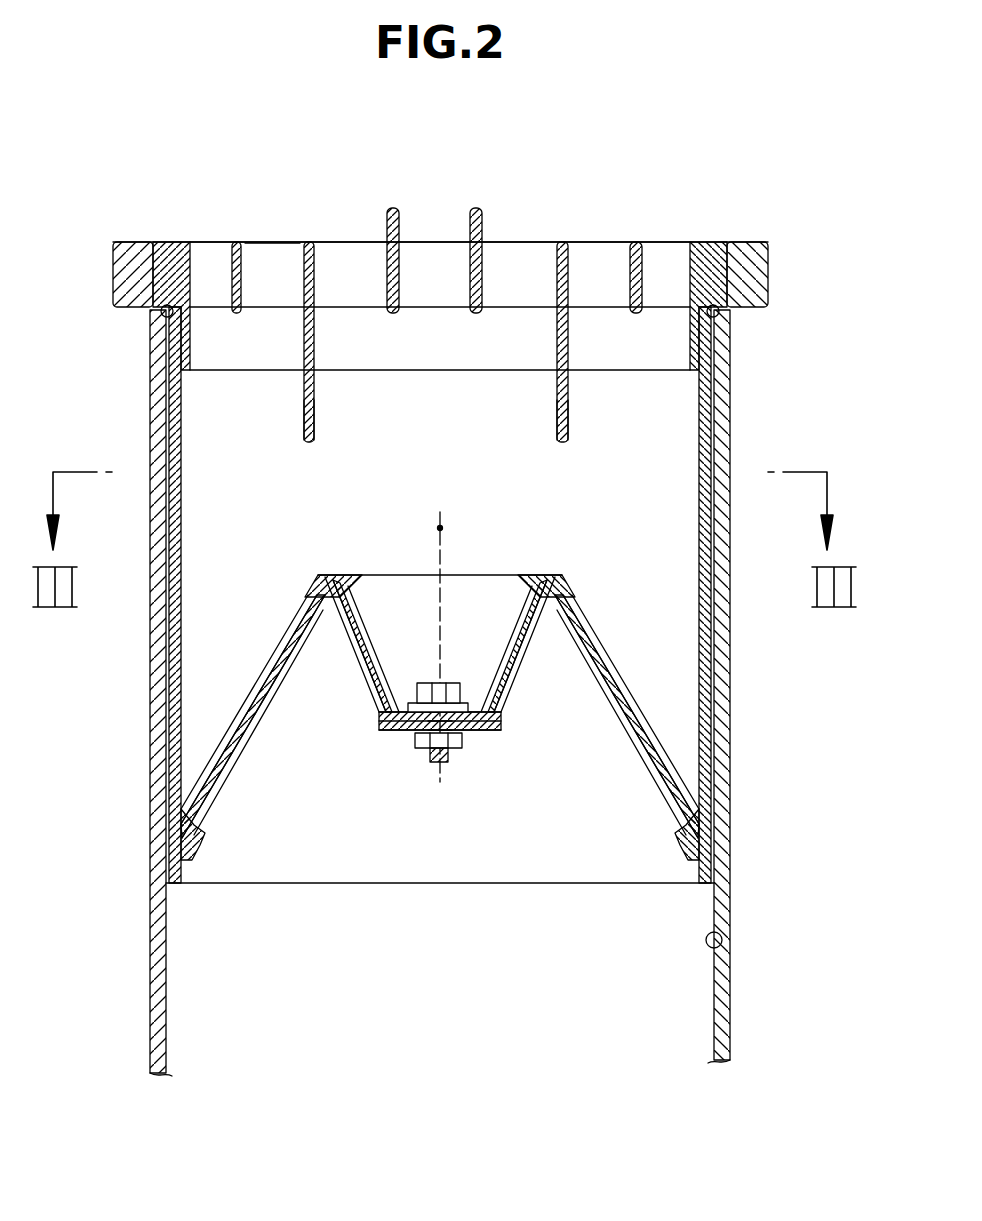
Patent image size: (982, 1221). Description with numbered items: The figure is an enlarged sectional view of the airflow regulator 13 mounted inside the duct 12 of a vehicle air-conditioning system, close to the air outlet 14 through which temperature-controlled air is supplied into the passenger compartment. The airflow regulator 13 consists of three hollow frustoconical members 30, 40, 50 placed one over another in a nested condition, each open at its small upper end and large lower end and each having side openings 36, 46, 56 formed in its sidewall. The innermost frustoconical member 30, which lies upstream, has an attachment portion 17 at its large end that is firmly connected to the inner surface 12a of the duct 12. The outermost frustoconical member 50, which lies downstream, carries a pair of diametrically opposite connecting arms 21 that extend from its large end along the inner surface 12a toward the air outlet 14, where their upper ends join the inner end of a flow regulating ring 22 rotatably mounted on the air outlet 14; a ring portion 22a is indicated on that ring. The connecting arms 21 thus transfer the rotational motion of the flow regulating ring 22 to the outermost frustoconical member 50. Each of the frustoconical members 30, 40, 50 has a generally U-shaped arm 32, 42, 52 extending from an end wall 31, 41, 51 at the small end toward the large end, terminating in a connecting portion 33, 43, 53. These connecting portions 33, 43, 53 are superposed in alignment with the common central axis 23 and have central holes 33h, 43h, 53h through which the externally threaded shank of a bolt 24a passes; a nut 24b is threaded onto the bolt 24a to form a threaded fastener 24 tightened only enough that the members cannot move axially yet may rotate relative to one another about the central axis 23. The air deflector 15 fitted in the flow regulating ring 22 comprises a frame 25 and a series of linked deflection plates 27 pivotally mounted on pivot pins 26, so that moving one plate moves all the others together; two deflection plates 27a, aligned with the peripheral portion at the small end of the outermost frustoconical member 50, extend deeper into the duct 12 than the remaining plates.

The duct 12 is at (736, 1018).
The inner surface of the duct 12a is at (722, 941).
The airflow regulator 13 is at (790, 225).
The air outlet 14 is at (513, 300).
The air deflector 15 is at (180, 242).
The attachment portion 17 is at (718, 876).
The connecting arms 21 is at (169, 668).
The flow regulating ring 22 is at (768, 268).
The inner flange portion 22a is at (707, 243).
The common central axis 23 is at (441, 528).
The threaded fastener 24 is at (443, 765).
The bolt 24a is at (442, 683).
The nut 24b is at (447, 757).
The frame 25 is at (262, 243).
The pivot pins 26 is at (243, 272).
The deflection plates 27 is at (304, 318).
The extended deflection plates 27a is at (314, 418).
The innermost frustoconical member 30 is at (575, 600).
The end wall 31 is at (333, 580).
The U-shaped arm 32 is at (360, 722).
The connecting portion 33 is at (386, 735).
The central hole 33h is at (462, 742).
The side opening 36 is at (296, 622).
The intermediate frustoconical member 40 is at (563, 590).
The end wall 41 is at (338, 582).
The U-shaped arm 42 is at (367, 705).
The connecting portion 43 is at (398, 733).
The central hole 43h is at (468, 734).
The side opening 46 is at (205, 800).
The outermost frustoconical member 50 is at (553, 582).
The end wall 51 is at (343, 583).
The U-shaped arm 52 is at (352, 643).
The connecting portion 53 is at (415, 742).
The central hole 53h is at (497, 712).
The side opening 56 is at (200, 820).